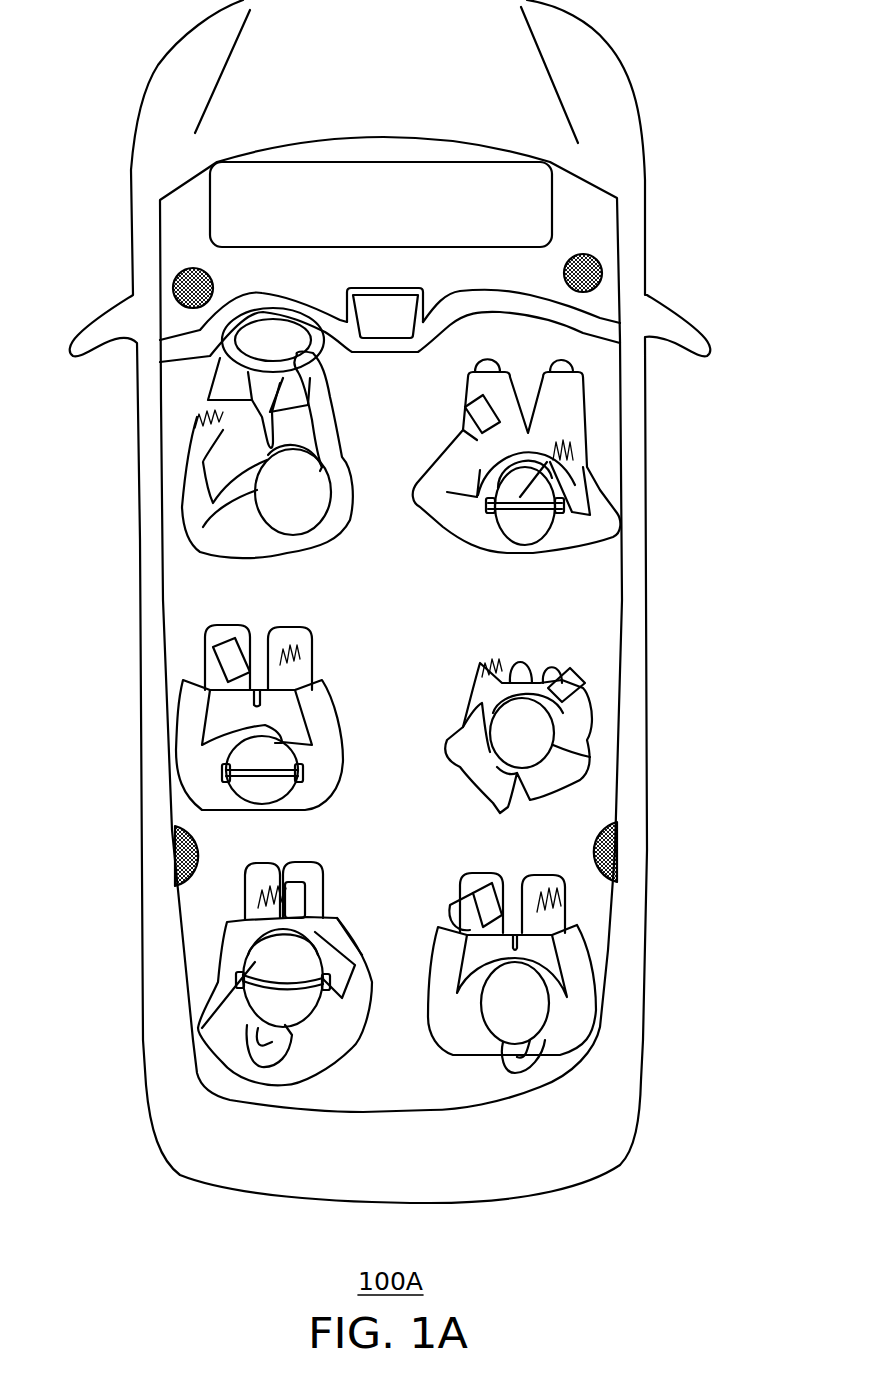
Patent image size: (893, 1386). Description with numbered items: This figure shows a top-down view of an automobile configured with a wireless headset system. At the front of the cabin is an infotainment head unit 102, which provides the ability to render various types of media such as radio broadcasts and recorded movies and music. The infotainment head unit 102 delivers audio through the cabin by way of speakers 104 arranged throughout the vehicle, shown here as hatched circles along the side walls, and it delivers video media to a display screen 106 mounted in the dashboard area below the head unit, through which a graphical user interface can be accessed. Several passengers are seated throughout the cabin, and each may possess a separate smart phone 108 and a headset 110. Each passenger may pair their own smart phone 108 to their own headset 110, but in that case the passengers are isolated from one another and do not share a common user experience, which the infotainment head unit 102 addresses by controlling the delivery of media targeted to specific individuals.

The infotainment head unit 102 is at (343, 162).
The speakers 104 is at (603, 267).
The display screen 106 is at (372, 292).
The smart phone 108 is at (227, 648).
The headset 110 is at (225, 770).